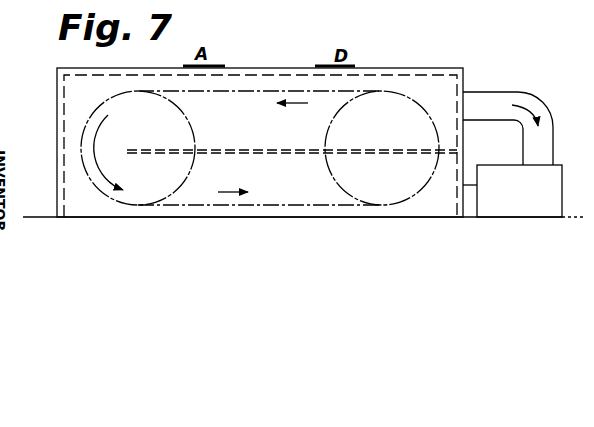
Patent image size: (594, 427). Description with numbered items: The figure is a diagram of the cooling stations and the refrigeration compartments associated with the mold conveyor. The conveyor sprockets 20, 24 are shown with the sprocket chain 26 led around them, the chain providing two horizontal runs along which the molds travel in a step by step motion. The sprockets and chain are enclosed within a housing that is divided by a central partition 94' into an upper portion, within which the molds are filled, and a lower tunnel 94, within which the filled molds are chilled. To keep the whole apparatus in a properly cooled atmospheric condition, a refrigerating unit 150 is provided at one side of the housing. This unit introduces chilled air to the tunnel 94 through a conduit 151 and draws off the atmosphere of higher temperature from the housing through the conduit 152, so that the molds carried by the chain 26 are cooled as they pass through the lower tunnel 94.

The sprocket wheel 24 is at (81, 134).
The sprocket wheel 20 is at (440, 140).
The sprocket chain 26 is at (252, 92).
The lower tunnel 94 is at (260, 213).
The central partition 94' is at (292, 138).
The conduit 152 is at (514, 92).
The refrigerating unit 150 is at (552, 210).
The conduit 151 is at (469, 205).